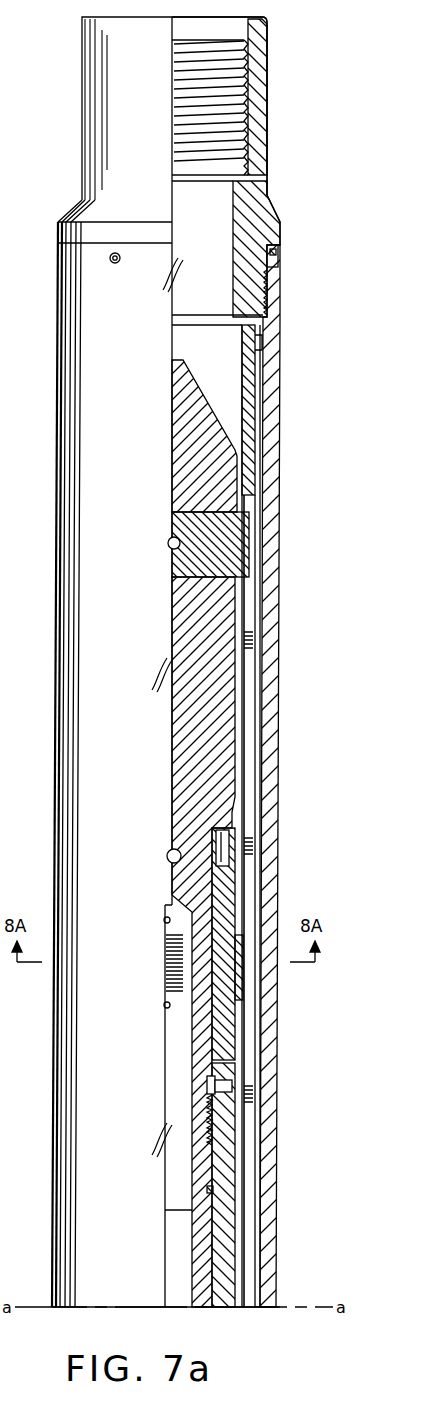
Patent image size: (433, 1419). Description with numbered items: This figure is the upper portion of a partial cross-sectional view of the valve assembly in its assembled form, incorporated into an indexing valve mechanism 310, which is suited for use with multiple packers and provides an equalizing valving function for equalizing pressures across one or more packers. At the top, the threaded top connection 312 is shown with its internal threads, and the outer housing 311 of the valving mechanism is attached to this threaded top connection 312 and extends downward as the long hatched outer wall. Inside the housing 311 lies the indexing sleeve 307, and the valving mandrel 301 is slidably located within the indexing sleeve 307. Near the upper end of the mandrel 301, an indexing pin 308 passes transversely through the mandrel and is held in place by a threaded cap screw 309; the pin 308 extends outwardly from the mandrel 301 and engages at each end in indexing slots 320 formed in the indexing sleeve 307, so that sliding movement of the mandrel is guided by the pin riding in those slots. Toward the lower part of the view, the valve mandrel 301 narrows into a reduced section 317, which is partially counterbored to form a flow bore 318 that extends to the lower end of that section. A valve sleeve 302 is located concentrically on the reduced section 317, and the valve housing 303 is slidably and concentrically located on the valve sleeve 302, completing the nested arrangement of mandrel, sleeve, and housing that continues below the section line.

The valving mandrel 301 is at (210, 712).
The valve sleeve 302 is at (215, 1010).
The valve housing 303 is at (228, 1038).
The indexing sleeve 307 is at (248, 431).
The indexing pin 308 is at (233, 548).
The threaded cap screw 309 is at (170, 540).
The indexing valve mechanism 310 is at (349, 886).
The housing 311 is at (272, 822).
The threaded top connection 312 is at (258, 222).
The reduced section 317 is at (195, 858).
The flow bore 318 is at (173, 1057).
The indexing slots 320 is at (248, 600).